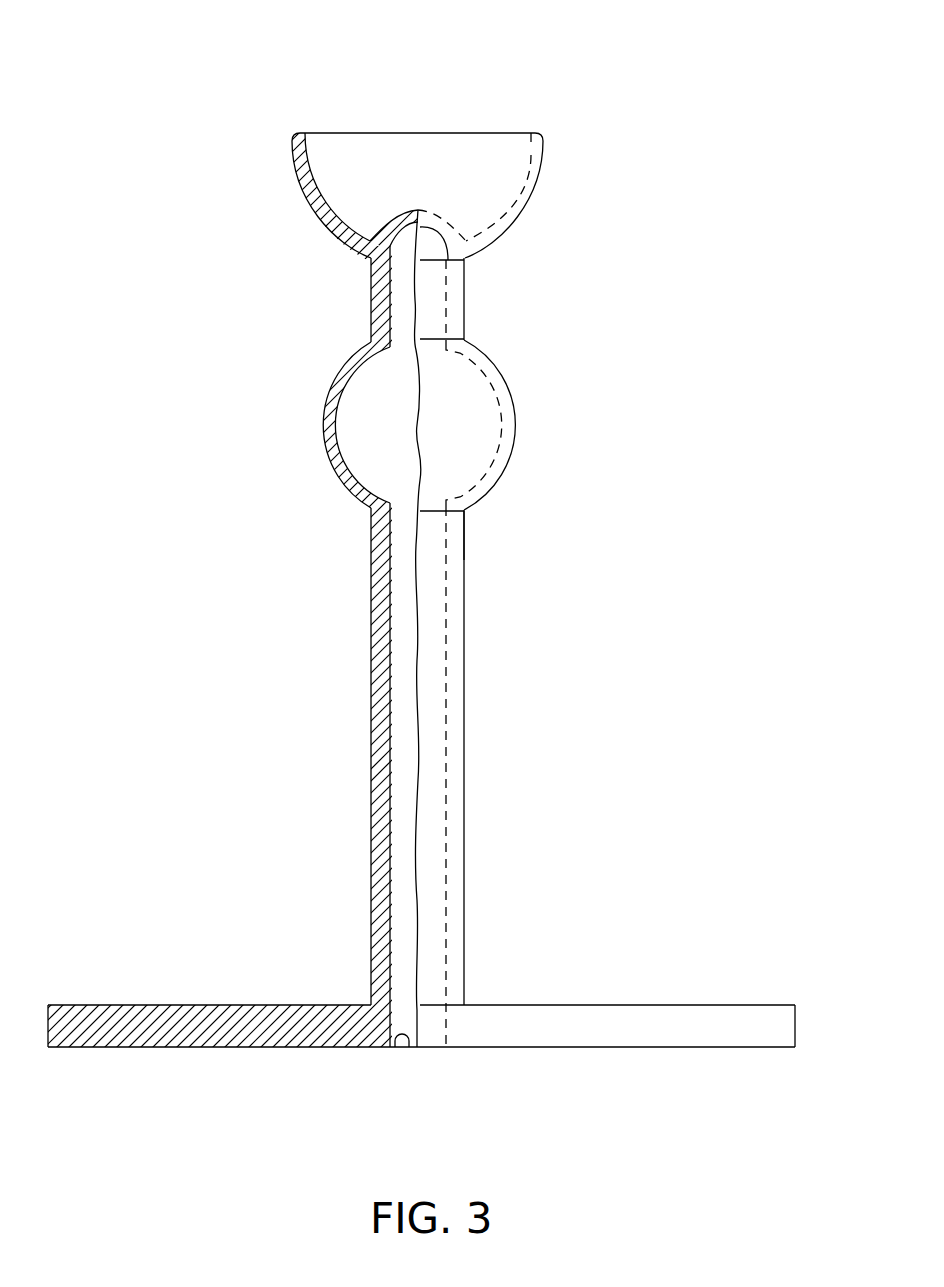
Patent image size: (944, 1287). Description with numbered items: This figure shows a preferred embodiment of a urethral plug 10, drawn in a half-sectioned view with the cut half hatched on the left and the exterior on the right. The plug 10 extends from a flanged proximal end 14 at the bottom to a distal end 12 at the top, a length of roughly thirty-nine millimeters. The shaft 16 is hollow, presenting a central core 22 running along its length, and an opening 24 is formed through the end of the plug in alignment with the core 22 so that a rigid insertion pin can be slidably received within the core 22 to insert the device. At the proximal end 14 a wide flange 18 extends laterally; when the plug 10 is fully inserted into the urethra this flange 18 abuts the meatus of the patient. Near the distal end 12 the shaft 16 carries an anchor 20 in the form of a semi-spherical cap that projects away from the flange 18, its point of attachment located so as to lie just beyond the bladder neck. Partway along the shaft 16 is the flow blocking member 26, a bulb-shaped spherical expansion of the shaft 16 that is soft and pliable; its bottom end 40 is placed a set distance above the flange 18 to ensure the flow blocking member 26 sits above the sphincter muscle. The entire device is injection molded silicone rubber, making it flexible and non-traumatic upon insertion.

The plug 10 is at (472, 566).
The distal end 12 is at (420, 209).
The proximal end 14 is at (468, 1048).
The shaft 16 is at (373, 647).
The flange 18 is at (203, 1003).
The anchor 20 is at (307, 202).
The core 22 is at (386, 776).
The opening 24 is at (410, 1050).
The flow blocking member 26 is at (323, 413).
The bottom end 40 is at (465, 511).